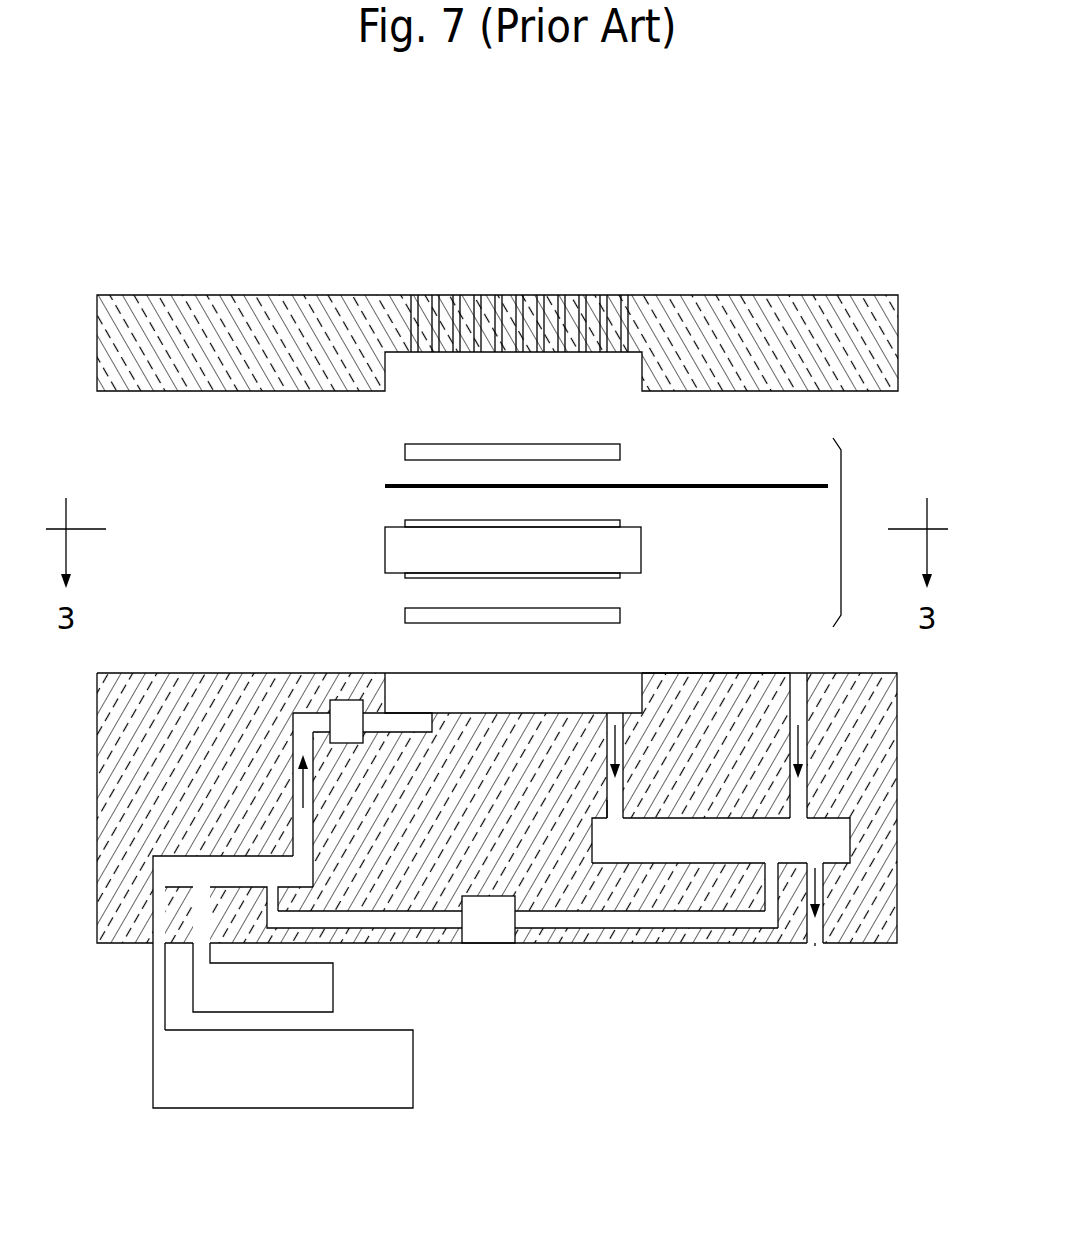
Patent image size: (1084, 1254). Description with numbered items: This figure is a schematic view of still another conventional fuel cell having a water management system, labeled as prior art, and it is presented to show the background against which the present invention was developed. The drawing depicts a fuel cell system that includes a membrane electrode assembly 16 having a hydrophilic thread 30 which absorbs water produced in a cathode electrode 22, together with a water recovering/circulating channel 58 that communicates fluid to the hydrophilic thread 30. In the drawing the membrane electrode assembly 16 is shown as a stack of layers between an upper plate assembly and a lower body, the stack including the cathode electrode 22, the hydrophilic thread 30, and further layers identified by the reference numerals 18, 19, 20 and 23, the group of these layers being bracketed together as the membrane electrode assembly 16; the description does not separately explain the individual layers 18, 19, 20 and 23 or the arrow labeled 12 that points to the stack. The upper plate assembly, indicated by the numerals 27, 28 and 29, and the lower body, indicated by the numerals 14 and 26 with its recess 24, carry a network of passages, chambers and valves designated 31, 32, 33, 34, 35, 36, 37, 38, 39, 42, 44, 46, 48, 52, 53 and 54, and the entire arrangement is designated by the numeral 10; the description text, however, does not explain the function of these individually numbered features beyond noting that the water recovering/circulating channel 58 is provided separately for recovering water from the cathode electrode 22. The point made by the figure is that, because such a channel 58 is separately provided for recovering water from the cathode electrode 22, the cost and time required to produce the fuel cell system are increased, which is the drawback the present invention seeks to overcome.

The apparatus 10 is at (654, 1065).
The workpiece assembly 12 is at (340, 552).
The lower plate 14 is at (172, 672).
The membrane electrode assembly 16 is at (853, 532).
The layer 18 is at (630, 577).
The layer 19 is at (625, 615).
The core block 20 is at (645, 548).
The cathode electrode 22 is at (625, 522).
The top layer 23 is at (622, 452).
The recess 24 is at (500, 682).
The lower plate portion 26 is at (718, 672).
The upper plate assembly 27 is at (506, 288).
The upper plate 28 is at (752, 297).
The vent slots 29 is at (497, 300).
The hydrophilic thread 30 is at (745, 490).
The passage 31 is at (210, 913).
The vertical passage 32 is at (315, 822).
The conduit 33 is at (152, 1000).
The passage 34 is at (300, 795).
The conduit 35 is at (323, 988).
The passage 36 is at (182, 862).
The reservoir 37 is at (403, 1070).
The inlet 38 is at (607, 800).
The valve 39 is at (340, 708).
The passage 42 is at (622, 745).
The chamber 44 is at (654, 855).
The passage 46 is at (772, 875).
The outlet passage 48 is at (824, 890).
The outlet 52 is at (815, 945).
The passage 53 is at (423, 945).
The valve 54 is at (490, 945).
The water recovering/circulating channel 58 is at (805, 745).